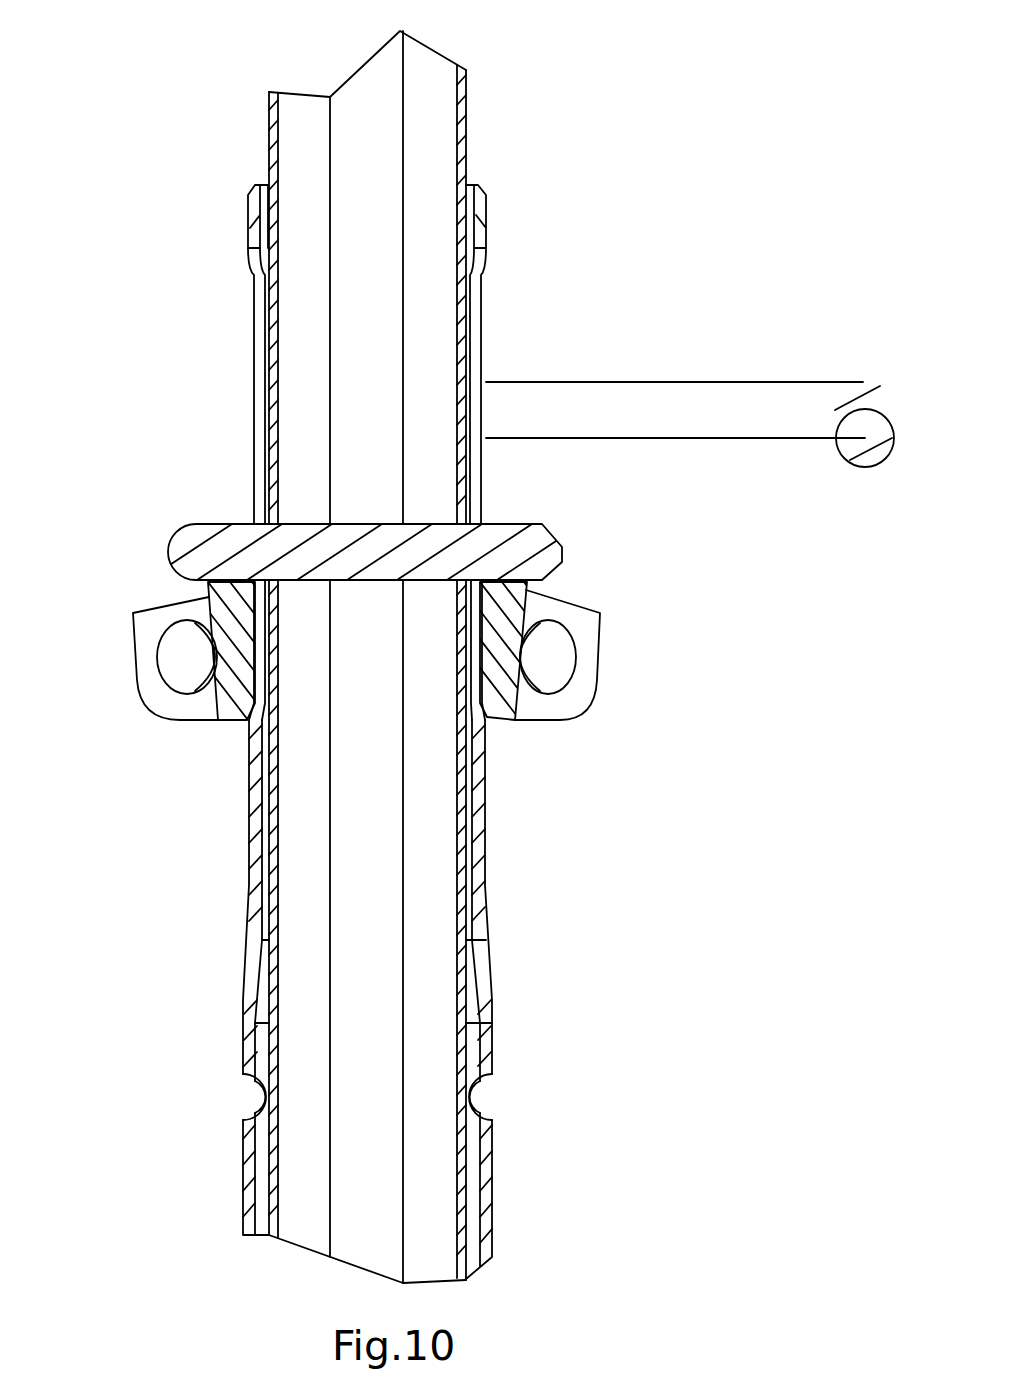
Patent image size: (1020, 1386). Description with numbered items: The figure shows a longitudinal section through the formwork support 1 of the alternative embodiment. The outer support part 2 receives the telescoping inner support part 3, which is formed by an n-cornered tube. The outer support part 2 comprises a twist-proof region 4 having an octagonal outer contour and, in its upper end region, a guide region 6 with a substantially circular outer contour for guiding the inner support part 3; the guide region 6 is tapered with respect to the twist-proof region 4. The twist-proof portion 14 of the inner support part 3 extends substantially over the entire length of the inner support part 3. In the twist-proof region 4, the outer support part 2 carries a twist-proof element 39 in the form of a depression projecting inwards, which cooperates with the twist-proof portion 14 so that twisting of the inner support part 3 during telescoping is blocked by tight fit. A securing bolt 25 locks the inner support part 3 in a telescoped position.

The formwork support 1 is at (180, 817).
The outer support part 2 is at (486, 1220).
The inner support part 3 is at (460, 112).
The twist-proof region 4 is at (182, 1052).
The guide region 6 is at (520, 784).
The twist-proof portion 14 is at (295, 150).
The securing bolt 25 is at (520, 545).
The twist-proof element 39 is at (213, 1096).